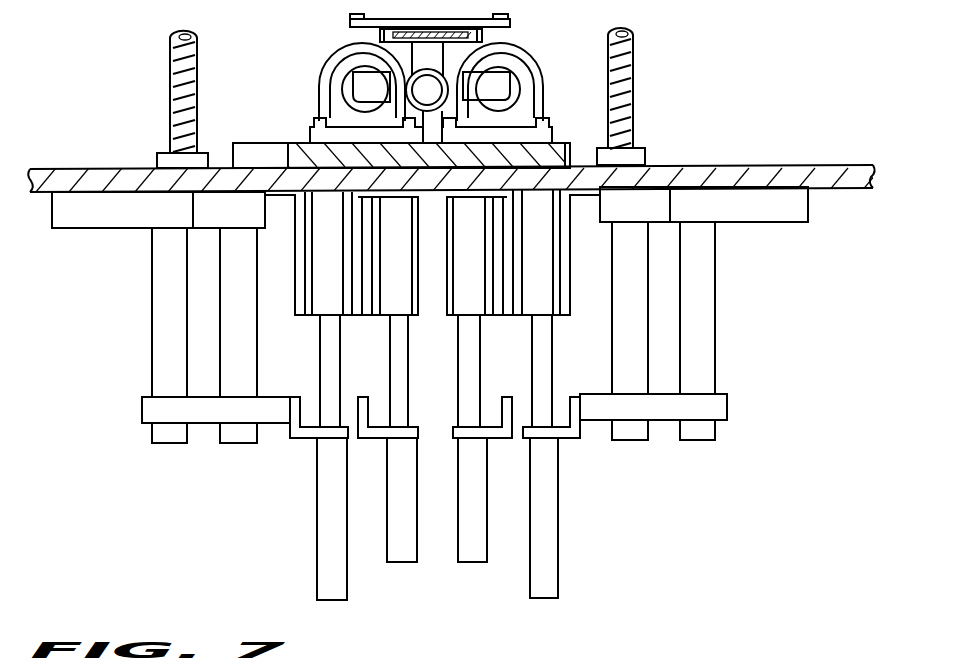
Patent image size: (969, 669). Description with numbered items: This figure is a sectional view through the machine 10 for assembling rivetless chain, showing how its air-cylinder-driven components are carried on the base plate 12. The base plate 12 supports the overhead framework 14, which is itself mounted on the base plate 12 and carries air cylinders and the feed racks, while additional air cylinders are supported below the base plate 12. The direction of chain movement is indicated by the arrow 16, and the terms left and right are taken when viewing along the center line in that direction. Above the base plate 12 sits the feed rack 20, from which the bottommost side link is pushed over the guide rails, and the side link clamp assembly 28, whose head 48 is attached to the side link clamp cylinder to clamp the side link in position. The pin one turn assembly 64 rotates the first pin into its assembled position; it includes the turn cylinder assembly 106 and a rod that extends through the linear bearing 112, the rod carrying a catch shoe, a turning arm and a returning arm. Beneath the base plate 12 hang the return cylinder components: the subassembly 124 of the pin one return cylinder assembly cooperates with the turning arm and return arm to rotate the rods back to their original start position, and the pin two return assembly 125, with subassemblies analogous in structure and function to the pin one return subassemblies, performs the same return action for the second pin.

The machine for assembling rivetless chain 10 is at (112, 104).
The base plate 12 is at (863, 188).
The overhead framework 14 is at (638, 57).
The arrows 16 is at (800, 117).
The feed rack 20 is at (350, 20).
The clamp assembly 28 is at (396, 87).
The head 48 is at (407, 108).
The pin 1 turn assembly 64 is at (512, 83).
The turn cylinder assembly 106 is at (495, 494).
The linear bearing 112 is at (539, 116).
The return cylinder subassembly 124 is at (564, 553).
The pin 2 return assembly 125 is at (314, 526).